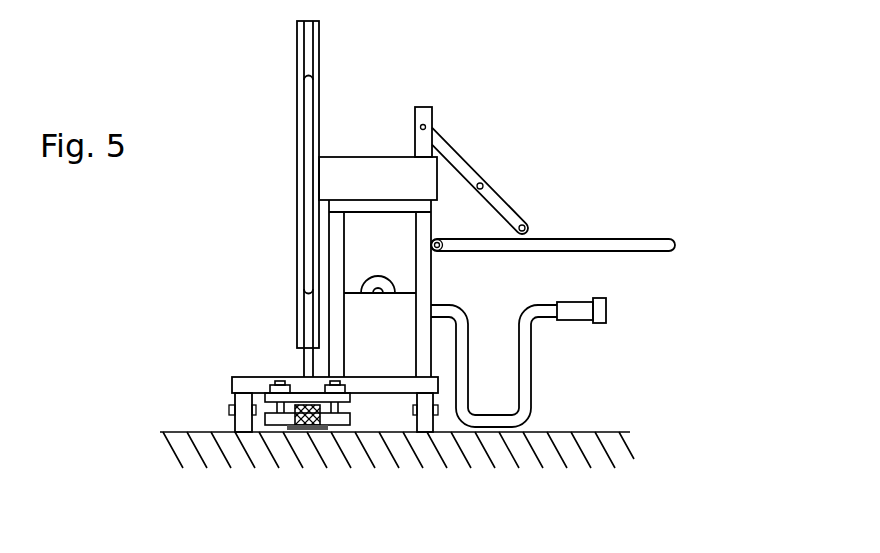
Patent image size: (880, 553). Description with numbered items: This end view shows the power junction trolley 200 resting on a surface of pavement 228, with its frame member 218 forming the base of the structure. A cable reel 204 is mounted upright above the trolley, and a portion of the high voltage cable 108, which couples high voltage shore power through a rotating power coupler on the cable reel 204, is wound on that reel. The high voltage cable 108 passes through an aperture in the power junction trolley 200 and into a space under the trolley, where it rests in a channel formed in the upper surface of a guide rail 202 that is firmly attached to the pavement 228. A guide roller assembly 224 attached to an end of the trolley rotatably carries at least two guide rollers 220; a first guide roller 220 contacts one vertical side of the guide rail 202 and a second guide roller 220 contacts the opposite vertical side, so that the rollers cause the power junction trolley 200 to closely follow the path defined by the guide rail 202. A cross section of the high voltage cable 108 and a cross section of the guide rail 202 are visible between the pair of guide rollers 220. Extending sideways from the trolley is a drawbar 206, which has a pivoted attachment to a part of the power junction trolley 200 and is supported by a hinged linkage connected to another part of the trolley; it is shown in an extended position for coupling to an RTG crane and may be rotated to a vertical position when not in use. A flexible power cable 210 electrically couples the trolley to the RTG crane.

The power junction trolley 200 is at (658, 100).
The cable reel 204 is at (297, 50).
The high voltage cable 108 is at (303, 368).
The drawbar 206 is at (550, 239).
The hose 210 is at (530, 376).
The frame member 218 is at (232, 378).
The guide roller 220 is at (265, 418).
The guide roller assembly 224 is at (352, 379).
The guide rail 202 is at (319, 404).
The pavement 228 is at (632, 452).